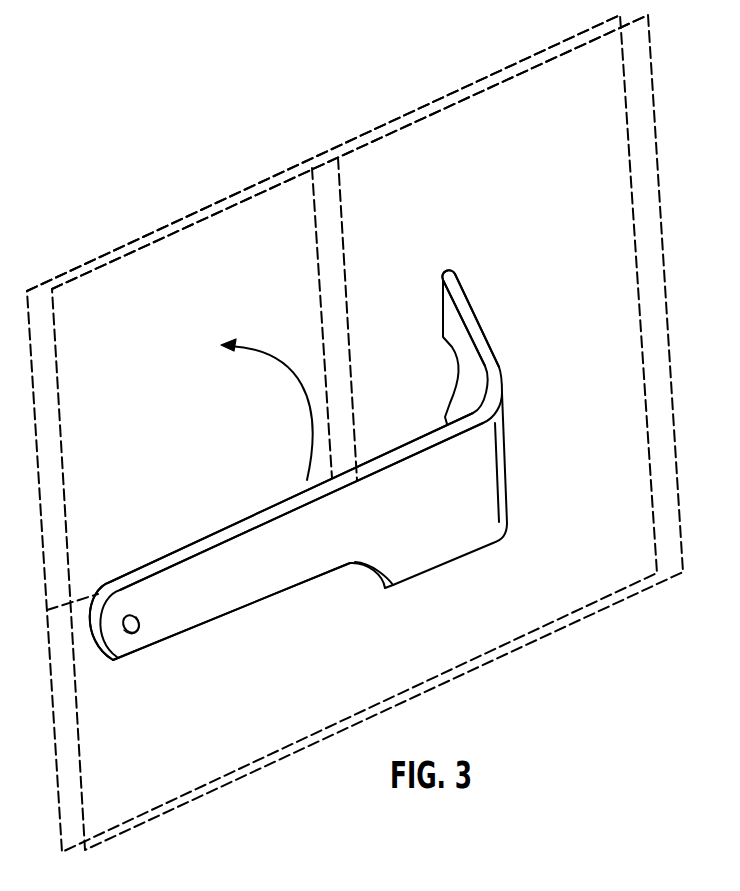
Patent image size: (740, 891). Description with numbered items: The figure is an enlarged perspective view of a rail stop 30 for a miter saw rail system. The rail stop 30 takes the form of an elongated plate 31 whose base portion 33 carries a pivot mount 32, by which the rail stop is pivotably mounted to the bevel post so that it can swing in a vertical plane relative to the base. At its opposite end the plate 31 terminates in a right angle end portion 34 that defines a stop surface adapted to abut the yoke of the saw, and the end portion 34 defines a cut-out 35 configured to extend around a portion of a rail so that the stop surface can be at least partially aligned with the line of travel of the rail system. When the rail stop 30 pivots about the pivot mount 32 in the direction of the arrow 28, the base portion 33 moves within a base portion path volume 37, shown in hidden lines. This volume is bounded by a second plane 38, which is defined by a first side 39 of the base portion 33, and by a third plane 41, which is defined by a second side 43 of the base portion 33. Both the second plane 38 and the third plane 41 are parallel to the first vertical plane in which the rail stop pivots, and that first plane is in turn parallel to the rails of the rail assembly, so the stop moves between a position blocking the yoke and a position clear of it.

The arrow 28 is at (277, 357).
The rail stop 30 is at (509, 457).
The elongated plate 31 is at (220, 558).
The pivot mount 32 is at (139, 633).
The base portion 33 is at (128, 565).
The end portion 34 is at (467, 316).
The cut-out 35 is at (452, 350).
The base portion path volume 37 is at (223, 203).
The second plane 38 is at (68, 271).
The first side 39 is at (167, 555).
The third plane 41 is at (134, 250).
The second side 43 is at (205, 629).